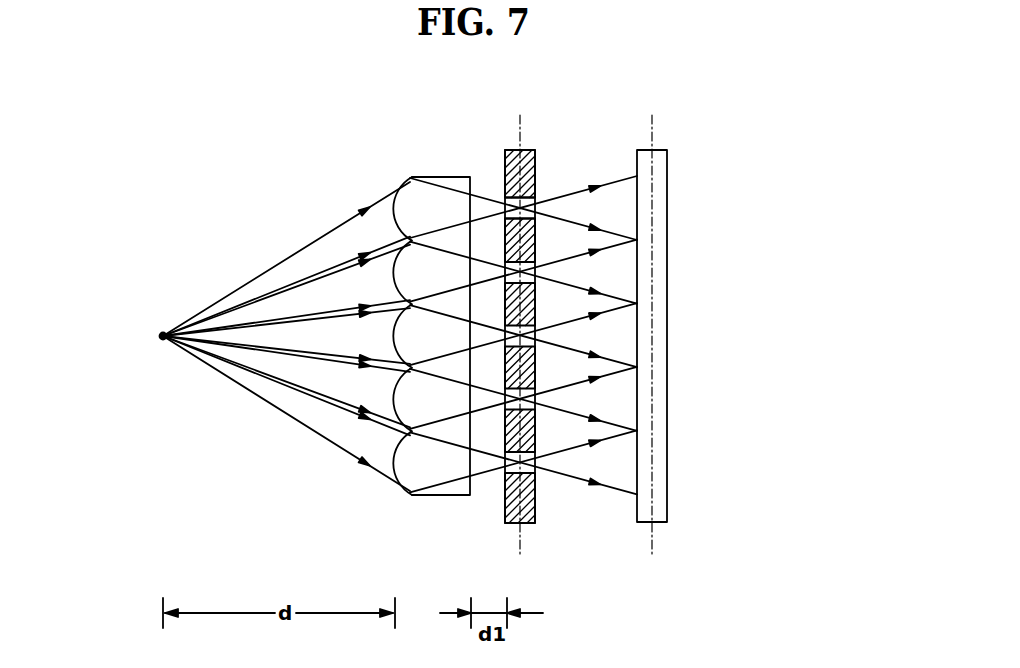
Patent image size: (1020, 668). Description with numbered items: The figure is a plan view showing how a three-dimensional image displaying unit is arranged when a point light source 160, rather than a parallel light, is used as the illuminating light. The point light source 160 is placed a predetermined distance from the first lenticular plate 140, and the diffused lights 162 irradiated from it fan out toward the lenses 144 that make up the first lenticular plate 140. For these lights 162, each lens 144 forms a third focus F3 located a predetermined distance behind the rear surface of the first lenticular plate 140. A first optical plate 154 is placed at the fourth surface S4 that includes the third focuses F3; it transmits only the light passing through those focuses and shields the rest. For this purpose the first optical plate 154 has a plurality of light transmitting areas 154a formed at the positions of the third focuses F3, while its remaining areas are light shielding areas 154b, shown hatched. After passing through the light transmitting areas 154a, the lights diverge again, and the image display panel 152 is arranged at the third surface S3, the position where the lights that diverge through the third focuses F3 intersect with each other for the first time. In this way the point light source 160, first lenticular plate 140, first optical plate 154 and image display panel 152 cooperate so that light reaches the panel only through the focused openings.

The first lenticular plate 140 is at (408, 303).
The lens 144 is at (406, 203).
The image display panel 152 is at (660, 148).
The first optical plate 154 is at (530, 328).
The light transmitting area 154a is at (536, 498).
The light shielding area 154b is at (505, 524).
The point light source 160 is at (161, 334).
The light 162 is at (272, 262).
The third focus F3 is at (537, 201).
The third surface S3 is at (652, 550).
The fourth surface S4 is at (520, 550).